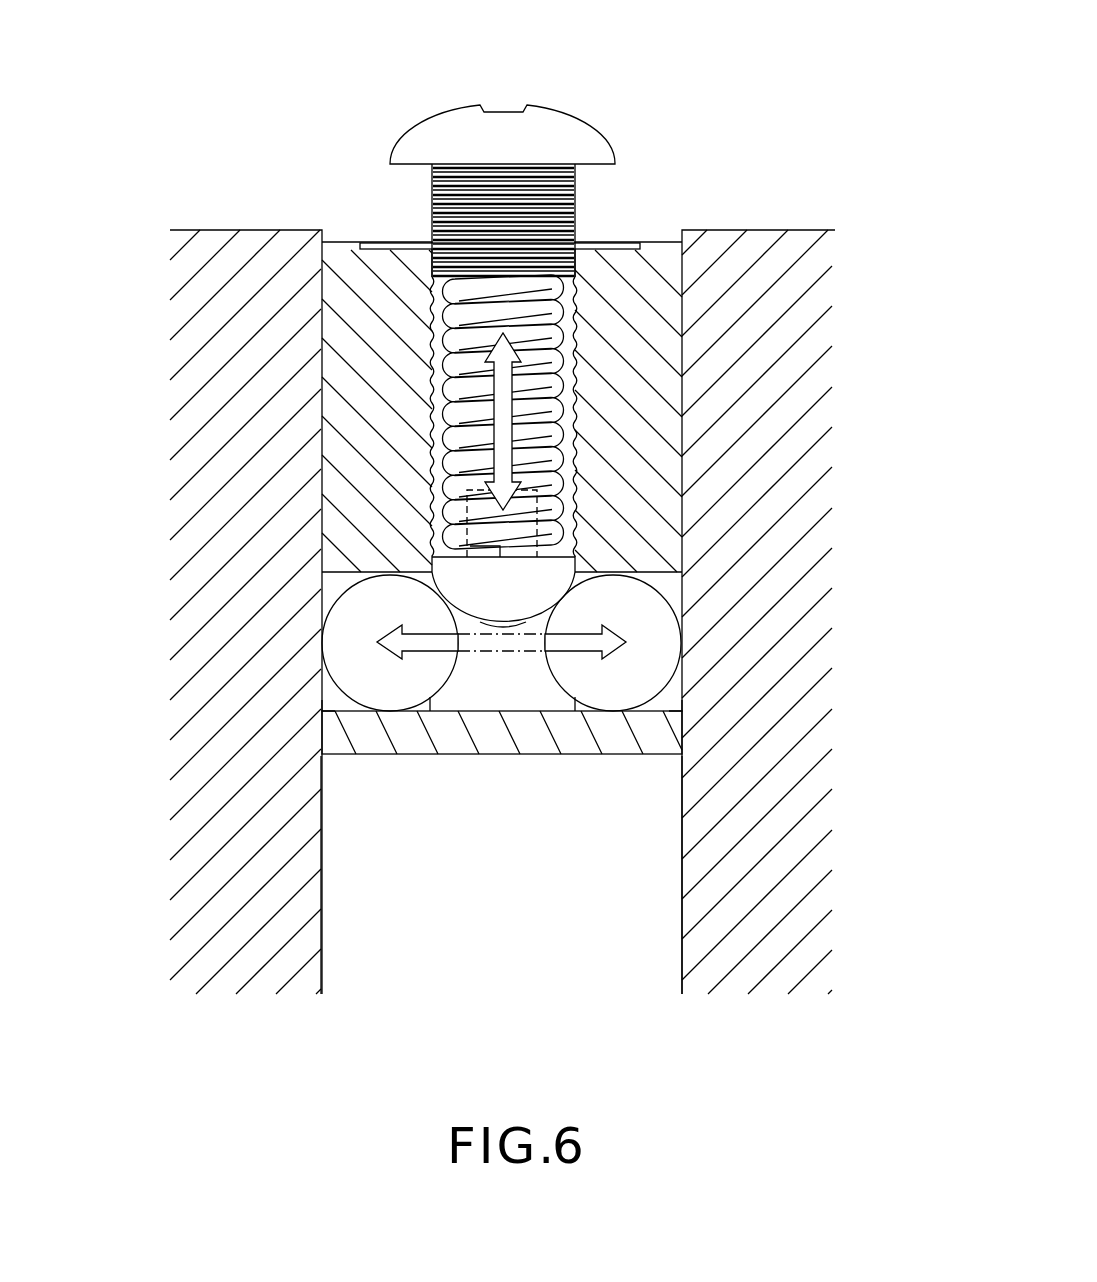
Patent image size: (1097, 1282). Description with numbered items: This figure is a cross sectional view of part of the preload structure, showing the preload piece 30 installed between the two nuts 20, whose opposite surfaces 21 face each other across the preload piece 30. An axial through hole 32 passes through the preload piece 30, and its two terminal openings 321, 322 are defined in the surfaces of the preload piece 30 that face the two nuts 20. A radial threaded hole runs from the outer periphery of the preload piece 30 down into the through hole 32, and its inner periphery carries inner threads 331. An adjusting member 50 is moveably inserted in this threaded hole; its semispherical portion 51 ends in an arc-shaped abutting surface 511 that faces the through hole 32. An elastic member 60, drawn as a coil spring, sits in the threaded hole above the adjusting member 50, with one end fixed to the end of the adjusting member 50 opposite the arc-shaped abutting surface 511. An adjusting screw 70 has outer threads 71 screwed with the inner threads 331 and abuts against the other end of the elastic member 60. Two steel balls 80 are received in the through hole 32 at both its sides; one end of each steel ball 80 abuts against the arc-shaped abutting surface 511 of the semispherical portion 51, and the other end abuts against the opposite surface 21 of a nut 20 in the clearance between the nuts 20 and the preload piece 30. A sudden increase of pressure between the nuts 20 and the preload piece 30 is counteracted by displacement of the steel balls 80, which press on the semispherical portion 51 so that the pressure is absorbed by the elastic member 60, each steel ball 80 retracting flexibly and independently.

The nut 20 is at (758, 255).
The opposite surface 21 is at (321, 911).
The preload piece 30 is at (630, 430).
The through hole 32 is at (495, 685).
The terminal opening 321 is at (333, 695).
The terminal opening 322 is at (670, 705).
The inner thread 331 is at (577, 315).
The adjusting member 50 is at (576, 521).
The semispherical portion 51 is at (540, 579).
The arc-shaped abutting surface 511 is at (560, 622).
The elastic member 60 is at (450, 425).
The adjusting screw 70 is at (557, 130).
The outer thread 71 is at (573, 213).
The steel ball 80 is at (648, 670).